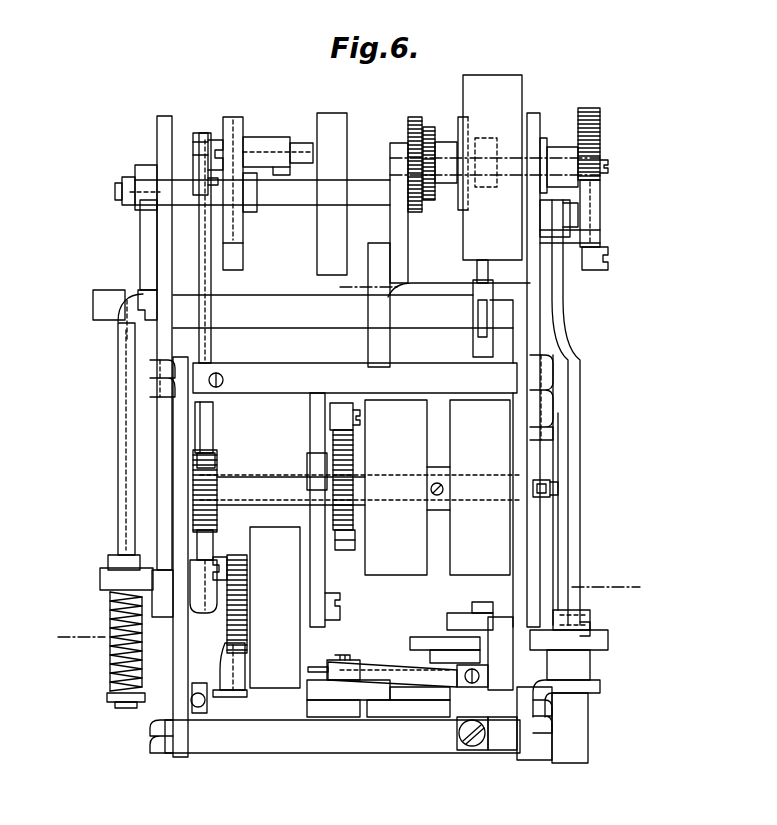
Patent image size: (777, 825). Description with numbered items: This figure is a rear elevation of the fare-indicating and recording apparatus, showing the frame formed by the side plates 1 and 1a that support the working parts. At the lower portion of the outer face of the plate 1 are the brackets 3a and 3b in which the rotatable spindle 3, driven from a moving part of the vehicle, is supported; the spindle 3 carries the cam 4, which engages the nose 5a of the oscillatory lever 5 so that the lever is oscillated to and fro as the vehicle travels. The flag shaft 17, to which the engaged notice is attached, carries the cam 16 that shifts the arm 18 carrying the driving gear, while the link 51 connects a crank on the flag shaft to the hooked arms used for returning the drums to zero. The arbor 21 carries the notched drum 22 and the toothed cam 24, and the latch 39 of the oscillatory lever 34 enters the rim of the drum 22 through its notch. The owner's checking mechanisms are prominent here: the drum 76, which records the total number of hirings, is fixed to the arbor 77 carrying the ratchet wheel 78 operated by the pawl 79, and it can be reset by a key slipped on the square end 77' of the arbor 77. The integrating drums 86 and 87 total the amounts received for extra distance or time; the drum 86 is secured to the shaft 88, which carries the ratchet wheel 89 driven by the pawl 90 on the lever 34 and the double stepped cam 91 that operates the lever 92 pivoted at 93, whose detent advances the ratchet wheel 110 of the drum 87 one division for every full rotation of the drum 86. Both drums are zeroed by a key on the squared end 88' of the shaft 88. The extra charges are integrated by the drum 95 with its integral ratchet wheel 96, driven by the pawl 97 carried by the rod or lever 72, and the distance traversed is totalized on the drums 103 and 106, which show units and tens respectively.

The side plate 1 is at (527, 452).
The side plate 1a is at (167, 436).
The rotatable spindle 3 is at (578, 741).
The bracket 3a is at (597, 685).
The bracket 3b is at (590, 619).
The cam 4 is at (605, 648).
The oscillatory lever 5 is at (573, 525).
The nose 5a is at (587, 629).
The cam 16 is at (484, 350).
The flag shaft 17 is at (104, 302).
The arm 18 is at (477, 277).
The arbor 21 is at (370, 190).
The drum 22 is at (330, 122).
The toothed cam 24 is at (236, 125).
The oscillatory lever 34 is at (211, 348).
The latch 39 is at (300, 140).
The link 51 is at (125, 378).
The rod or lever 72 is at (193, 694).
The drum 76 is at (498, 85).
The arbor 77 is at (495, 141).
The square end 77' is at (624, 152).
The ratchet wheel 78 is at (594, 108).
The pawl 79 is at (587, 218).
The drum 86 is at (480, 487).
The drum 87 is at (360, 487).
The shaft 88 is at (570, 478).
The squared end 88' is at (592, 495).
The ratchet wheel 89 is at (205, 474).
The pawl 90 is at (212, 431).
The double stepped cam 91 is at (318, 481).
The lever 92 is at (330, 415).
The pivot 93 is at (340, 619).
The drum 95 is at (275, 607).
The ratchet wheel 96 is at (238, 556).
The pawl 97 is at (230, 658).
The drum 103 is at (392, 710).
The drum 106 is at (318, 690).
The ratchet wheel 110 is at (345, 550).